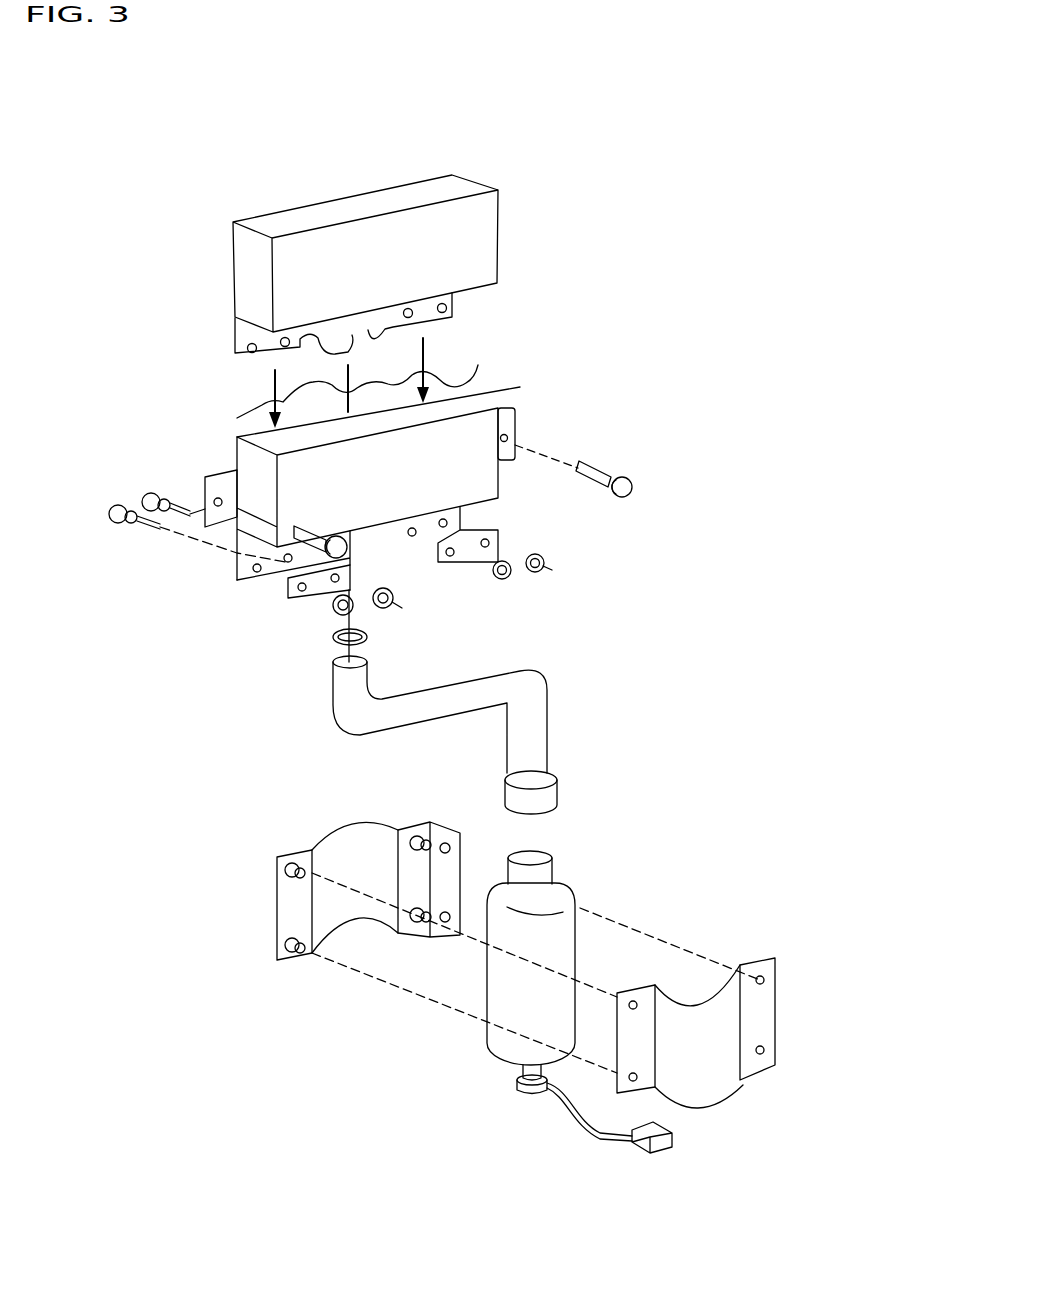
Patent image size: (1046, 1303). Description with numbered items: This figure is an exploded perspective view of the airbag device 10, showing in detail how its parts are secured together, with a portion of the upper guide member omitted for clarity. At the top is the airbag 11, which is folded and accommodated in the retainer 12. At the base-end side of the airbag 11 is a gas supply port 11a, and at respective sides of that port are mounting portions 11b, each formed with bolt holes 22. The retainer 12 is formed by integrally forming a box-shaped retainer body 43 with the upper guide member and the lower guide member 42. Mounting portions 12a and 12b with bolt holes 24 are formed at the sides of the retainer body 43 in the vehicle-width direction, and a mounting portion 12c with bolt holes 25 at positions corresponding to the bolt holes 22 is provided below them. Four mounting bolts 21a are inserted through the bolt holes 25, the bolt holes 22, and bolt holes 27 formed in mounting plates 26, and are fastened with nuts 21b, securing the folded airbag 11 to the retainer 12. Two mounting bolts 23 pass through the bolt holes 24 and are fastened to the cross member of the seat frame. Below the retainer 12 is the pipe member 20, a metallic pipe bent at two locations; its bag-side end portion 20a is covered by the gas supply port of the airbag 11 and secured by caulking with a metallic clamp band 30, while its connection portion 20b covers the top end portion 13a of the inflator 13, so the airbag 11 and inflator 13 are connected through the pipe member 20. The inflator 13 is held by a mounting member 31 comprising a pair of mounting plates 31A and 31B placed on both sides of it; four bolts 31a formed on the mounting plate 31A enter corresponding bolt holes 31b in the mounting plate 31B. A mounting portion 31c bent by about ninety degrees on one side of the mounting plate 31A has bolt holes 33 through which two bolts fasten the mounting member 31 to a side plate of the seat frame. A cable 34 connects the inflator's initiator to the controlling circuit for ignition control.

The airbag device 10 is at (627, 270).
The airbag 11 is at (357, 190).
The gas supply port 11a is at (360, 322).
The mounting portions 11b is at (357, 344).
The retainer 12 is at (490, 392).
The mounting portion 12a is at (222, 474).
The mounting portion 12b is at (516, 418).
The mounting portion 12c is at (462, 512).
The inflator 13 is at (585, 1020).
The top end portion 13a is at (553, 872).
The pipe member 20 is at (478, 735).
The bag-side end portion 20a is at (333, 692).
The connection portion 20b is at (560, 787).
The mounting bolts 21a is at (150, 497).
The nuts 21b is at (536, 575).
The bolt holes 22 is at (411, 316).
The mounting bolts 23 is at (633, 486).
The bolt holes 24 is at (208, 492).
The bolt holes 25 is at (411, 537).
The mounting plates 26 is at (498, 540).
The bolt holes 27 is at (470, 552).
The clamp band 30 is at (340, 642).
The mounting member 31 is at (520, 971).
The mounting plate 31A is at (332, 818).
The mounting plate 31B is at (712, 1080).
The bolts 31a is at (287, 947).
The bolt holes 31b is at (765, 982).
The mounting portion 31c is at (445, 825).
The bolt holes 33 is at (447, 923).
The cable 34 is at (582, 1132).
The lower guide member 42 is at (523, 385).
The retainer body 43 is at (503, 477).